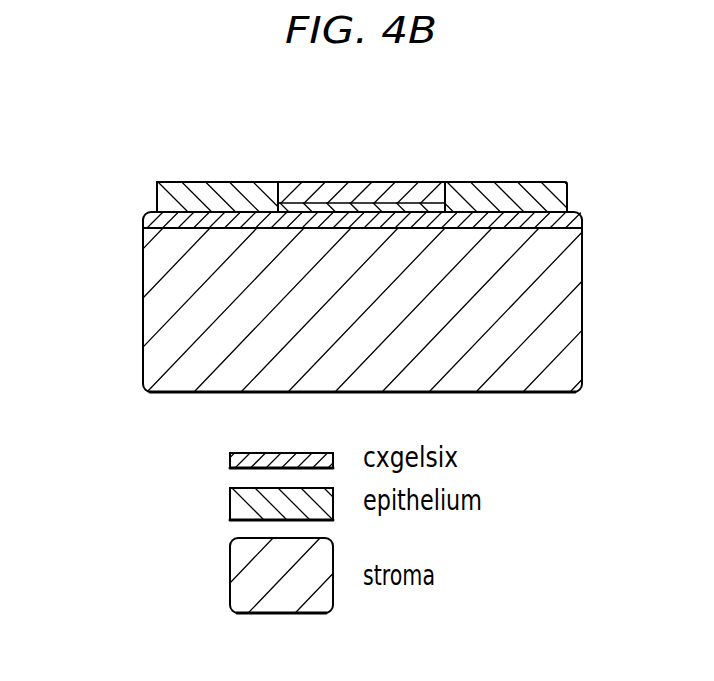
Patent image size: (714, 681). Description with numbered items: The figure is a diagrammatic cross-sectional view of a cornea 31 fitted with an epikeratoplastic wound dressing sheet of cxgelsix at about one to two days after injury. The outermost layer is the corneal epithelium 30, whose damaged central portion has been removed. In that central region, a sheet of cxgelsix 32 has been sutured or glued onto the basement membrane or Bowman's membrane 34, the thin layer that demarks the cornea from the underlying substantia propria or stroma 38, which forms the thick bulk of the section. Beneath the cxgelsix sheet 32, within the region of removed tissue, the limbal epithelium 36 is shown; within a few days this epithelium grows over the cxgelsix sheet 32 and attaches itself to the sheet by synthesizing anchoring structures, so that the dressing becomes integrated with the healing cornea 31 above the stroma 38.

The corneal epithelium 30 is at (155, 198).
The cornea 31 is at (98, 311).
The sheet of cxgelsix 32 is at (413, 203).
The basement membrane or Bowman's membrane 34 is at (569, 214).
The limbal epithelium 36 is at (445, 168).
The stroma 38 is at (582, 324).